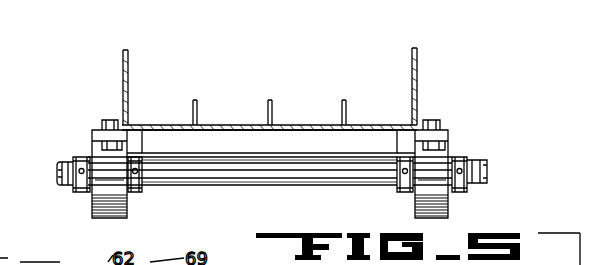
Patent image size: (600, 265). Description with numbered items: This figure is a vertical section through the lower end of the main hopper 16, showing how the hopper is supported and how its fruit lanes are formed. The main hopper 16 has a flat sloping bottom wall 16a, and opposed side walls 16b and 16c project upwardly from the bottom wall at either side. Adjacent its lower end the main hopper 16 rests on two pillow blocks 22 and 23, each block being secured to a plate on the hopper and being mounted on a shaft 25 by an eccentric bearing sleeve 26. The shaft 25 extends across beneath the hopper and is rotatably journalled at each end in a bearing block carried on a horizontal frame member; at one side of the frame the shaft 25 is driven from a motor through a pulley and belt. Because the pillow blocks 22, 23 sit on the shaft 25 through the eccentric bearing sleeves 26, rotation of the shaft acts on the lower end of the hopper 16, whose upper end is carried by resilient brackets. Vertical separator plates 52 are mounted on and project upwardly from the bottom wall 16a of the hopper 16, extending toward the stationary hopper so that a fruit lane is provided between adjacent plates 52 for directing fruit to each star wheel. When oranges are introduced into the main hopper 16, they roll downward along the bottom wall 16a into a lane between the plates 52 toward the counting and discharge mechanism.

The main hopper 16 is at (233, 125).
The bottom wall 16a is at (248, 130).
The side wall 16b is at (123, 85).
The side wall 16c is at (417, 73).
The separator plate 52 is at (193, 112).
The shaft 25 is at (62, 171).
The eccentric bearing sleeve 26 is at (88, 168).
The pillow block 22 is at (95, 203).
The pillow block 23 is at (427, 188).